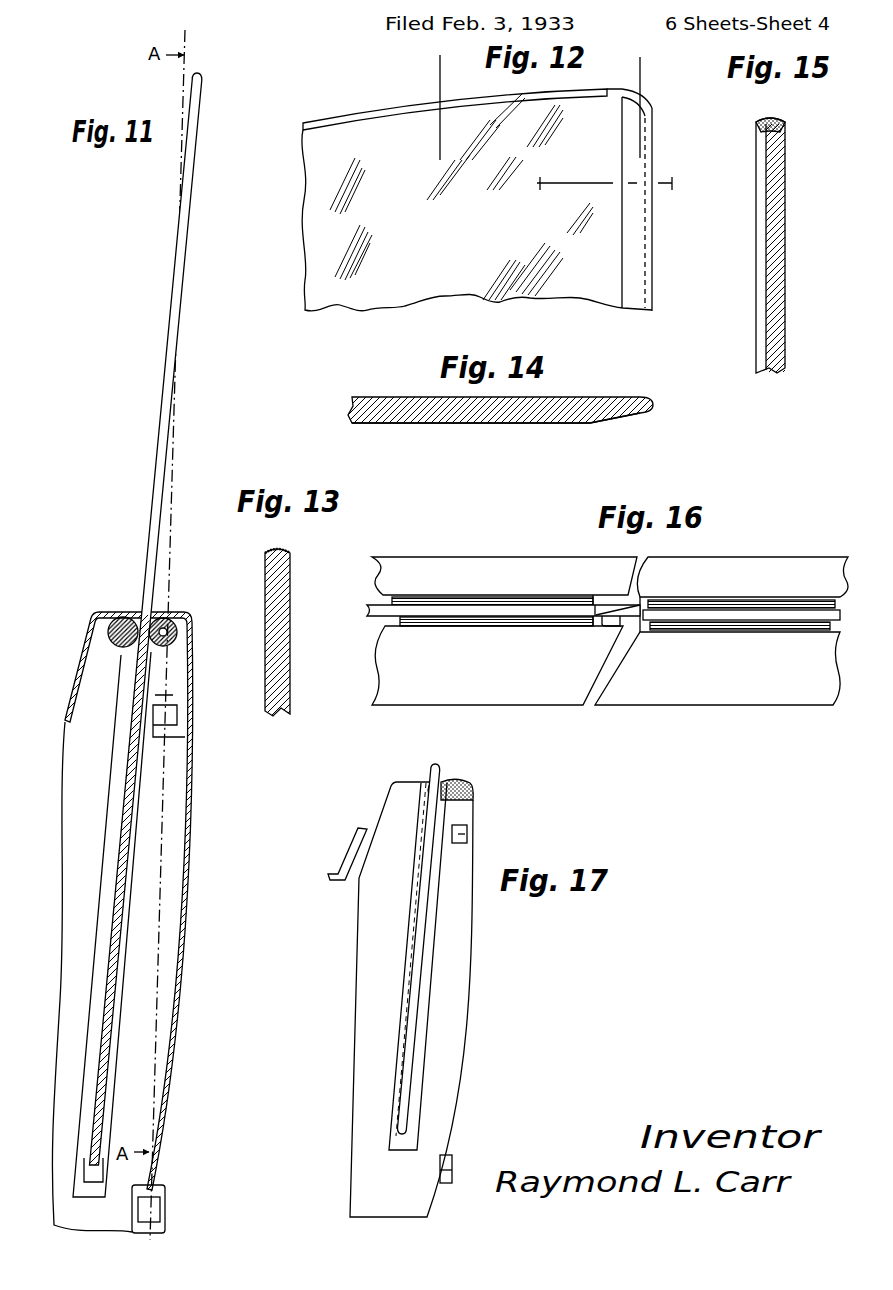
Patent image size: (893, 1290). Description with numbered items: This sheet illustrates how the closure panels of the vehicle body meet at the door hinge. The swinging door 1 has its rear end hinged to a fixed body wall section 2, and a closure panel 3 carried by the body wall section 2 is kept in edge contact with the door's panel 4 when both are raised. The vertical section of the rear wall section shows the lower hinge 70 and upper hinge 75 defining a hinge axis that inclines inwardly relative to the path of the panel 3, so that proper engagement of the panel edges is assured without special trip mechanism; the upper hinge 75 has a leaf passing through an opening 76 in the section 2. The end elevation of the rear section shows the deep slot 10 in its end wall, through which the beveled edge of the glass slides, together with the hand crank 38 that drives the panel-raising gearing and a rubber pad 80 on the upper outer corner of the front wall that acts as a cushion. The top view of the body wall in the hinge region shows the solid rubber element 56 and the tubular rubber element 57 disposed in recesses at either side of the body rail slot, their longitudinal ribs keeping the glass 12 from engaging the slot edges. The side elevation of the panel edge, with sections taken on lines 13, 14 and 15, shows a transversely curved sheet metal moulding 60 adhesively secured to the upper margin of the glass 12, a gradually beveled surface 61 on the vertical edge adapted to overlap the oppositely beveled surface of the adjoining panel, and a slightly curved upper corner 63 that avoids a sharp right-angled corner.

In FIG. 16, the swinging door 1 is at (510, 557).
In FIG. 11, the fixed body wall section 2 is at (183, 1022).
In FIG. 16, the fixed body wall section 2 is at (726, 557).
In FIG. 17, the fixed body wall section 2 is at (474, 935).
In FIG. 14, the closure panel 3 is at (523, 424).
In FIG. 16, the closure panel 3 is at (565, 614).
In FIG. 11, the panel 4 is at (118, 867).
In FIG. 16, the panel 4 is at (735, 619).
In FIG. 17, the panel 4 is at (417, 986).
In FIG. 11, the slot 10 is at (122, 775).
In FIG. 17, the slot 10 is at (411, 930).
In FIG. 12, the glass 12 is at (305, 297).
In FIG. 15, the glass 12 is at (756, 235).
In FIG. 14, the glass 12 is at (390, 396).
In FIG. 13, the glass 12 is at (292, 646).
In FIG. 12, the section line 13— 13 is at (436, 64).
In FIG. 12, the section line 14— 14 is at (540, 190).
In FIG. 12, the section line 15— 15 is at (636, 64).
In FIG. 17, the hand crank 38 is at (347, 863).
In FIG. 11, the solid rubber element 56 is at (139, 617).
In FIG. 16, the solid rubber element 56 is at (539, 597).
In FIG. 11, the tubular rubber element 57 is at (172, 618).
In FIG. 16, the tubular rubber element 57 is at (488, 627).
In FIG. 12, the sheet metal moulding 60 is at (383, 100).
In FIG. 15, the sheet metal moulding 60 is at (772, 119).
In FIG. 13, the sheet metal moulding 60 is at (289, 551).
In FIG. 12, the beveled surface 61 is at (640, 258).
In FIG. 15, the beveled surface 61 is at (764, 252).
In FIG. 14, the beveled surface 61 is at (607, 420).
In FIG. 16, the beveled surface 61 is at (618, 626).
In FIG. 12, the curved upper corner 63 is at (656, 99).
In FIG. 11, the lower hinge 70 is at (163, 1188).
In FIG. 17, the lower hinge 70 is at (452, 1163).
In FIG. 11, the upper hinge 75 is at (173, 695).
In FIG. 17, the opening 76 is at (468, 834).
In FIG. 17, the rubber pad 80 is at (471, 785).